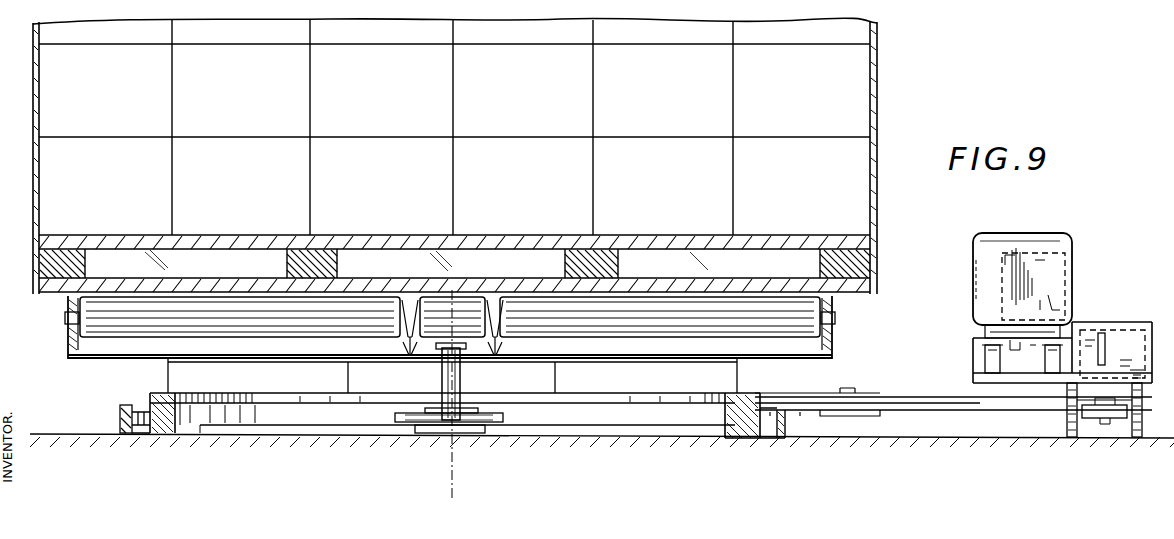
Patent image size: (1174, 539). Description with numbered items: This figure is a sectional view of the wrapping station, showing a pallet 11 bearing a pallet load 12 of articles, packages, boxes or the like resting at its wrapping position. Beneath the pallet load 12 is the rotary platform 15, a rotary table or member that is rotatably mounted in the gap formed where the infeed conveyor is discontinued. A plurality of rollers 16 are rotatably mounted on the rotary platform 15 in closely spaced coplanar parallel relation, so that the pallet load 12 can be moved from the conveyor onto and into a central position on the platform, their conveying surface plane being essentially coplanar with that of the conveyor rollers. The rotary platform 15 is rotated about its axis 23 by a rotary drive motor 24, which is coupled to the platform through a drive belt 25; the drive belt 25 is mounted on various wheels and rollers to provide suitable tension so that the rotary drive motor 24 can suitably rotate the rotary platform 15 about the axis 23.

The pallet 11 is at (90, 263).
The pallet load 12 is at (850, 78).
The rotary platform 15 is at (617, 392).
The rollers 16 is at (75, 331).
The axis 23 is at (452, 488).
The rotary drive motor 24 is at (1050, 240).
The drive belt 25 is at (1017, 412).